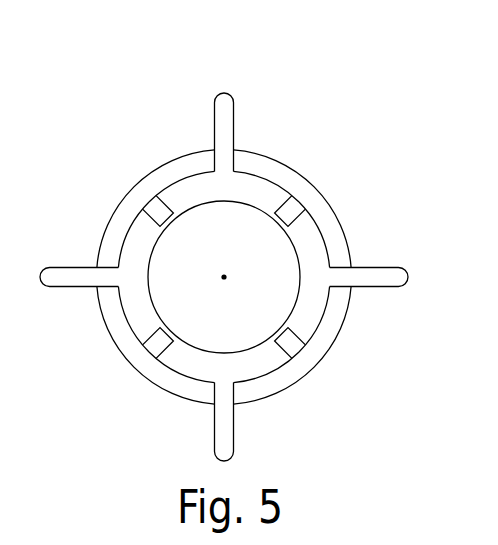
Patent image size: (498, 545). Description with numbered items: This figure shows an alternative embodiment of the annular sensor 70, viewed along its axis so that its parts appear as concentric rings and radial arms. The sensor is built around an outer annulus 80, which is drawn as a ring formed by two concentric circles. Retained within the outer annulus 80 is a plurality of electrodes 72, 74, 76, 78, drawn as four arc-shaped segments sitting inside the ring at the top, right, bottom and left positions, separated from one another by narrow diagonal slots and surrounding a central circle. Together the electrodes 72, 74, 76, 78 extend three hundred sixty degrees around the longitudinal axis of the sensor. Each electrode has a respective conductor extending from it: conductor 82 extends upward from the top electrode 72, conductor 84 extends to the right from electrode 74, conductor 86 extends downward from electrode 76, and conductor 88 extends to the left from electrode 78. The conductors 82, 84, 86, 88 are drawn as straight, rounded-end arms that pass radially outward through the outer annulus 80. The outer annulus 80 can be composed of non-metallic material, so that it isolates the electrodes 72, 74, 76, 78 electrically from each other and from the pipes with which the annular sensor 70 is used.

The annular sensor 70 is at (103, 95).
The electrode 72 is at (253, 185).
The electrode 74 is at (308, 232).
The electrode 76 is at (258, 357).
The electrode 78 is at (130, 303).
The outer annulus 80 is at (322, 337).
The conductor 82 is at (232, 92).
The conductor 84 is at (403, 267).
The conductor 86 is at (215, 418).
The conductor 88 is at (70, 265).